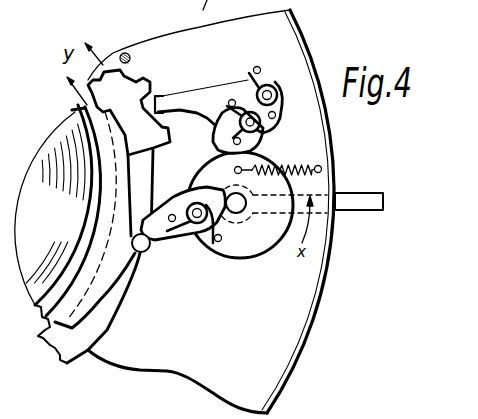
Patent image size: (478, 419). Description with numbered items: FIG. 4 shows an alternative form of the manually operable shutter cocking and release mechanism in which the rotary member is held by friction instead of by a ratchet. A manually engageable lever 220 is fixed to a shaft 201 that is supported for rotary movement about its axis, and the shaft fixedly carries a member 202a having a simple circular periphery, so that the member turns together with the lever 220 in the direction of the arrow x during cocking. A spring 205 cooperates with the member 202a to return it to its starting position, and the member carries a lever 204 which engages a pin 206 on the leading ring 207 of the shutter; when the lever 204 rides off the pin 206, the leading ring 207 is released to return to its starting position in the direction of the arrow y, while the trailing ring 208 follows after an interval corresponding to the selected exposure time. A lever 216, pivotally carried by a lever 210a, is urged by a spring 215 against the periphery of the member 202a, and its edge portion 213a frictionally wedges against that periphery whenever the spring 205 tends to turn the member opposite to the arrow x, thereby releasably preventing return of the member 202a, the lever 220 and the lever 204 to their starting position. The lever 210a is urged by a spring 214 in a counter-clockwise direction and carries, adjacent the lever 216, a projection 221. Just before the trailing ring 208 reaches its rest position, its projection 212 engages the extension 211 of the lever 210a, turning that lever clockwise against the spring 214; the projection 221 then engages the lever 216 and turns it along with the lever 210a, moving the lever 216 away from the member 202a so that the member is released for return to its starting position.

The shaft 201 is at (238, 214).
The member 202a is at (278, 232).
The lever 204 is at (175, 232).
The spring 205 is at (300, 168).
The pin 206 is at (147, 252).
The leading ring 207 is at (105, 315).
The trailing ring 208 is at (93, 247).
The lever 210a is at (208, 93).
The extension 211 is at (158, 95).
The projection 212 is at (165, 133).
The edge portion 213a is at (212, 147).
The spring 214 is at (258, 79).
The spring 215 is at (237, 100).
The lever 216 is at (263, 148).
The manually engageable lever 220 is at (357, 200).
The projection 221 is at (272, 128).